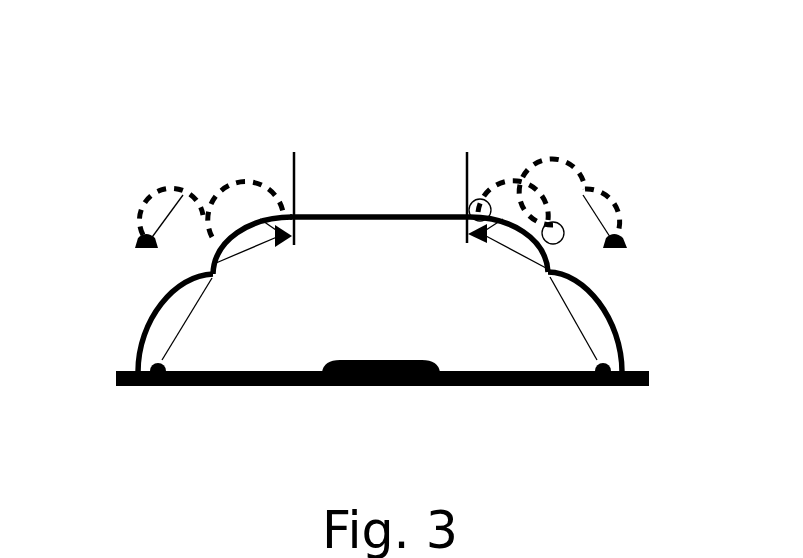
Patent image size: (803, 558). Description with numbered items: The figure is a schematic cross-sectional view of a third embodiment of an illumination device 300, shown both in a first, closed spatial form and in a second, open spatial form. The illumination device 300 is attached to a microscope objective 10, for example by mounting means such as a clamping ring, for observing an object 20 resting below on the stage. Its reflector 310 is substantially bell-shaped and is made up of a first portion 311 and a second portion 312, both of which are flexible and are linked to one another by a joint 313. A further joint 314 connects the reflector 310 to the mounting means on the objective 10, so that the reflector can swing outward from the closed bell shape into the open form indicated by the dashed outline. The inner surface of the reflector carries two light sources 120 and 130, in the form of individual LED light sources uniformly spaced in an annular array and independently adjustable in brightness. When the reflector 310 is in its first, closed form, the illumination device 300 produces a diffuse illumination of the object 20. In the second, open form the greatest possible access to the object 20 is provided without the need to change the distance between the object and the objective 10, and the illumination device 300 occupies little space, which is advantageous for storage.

The illumination device 300 is at (85, 54).
The microscope objective 10 is at (330, 214).
The object 20 is at (400, 362).
The light source 120 is at (168, 362).
The light source 130 is at (381, 255).
The reflector 310 is at (555, 140).
The first portion 311 is at (540, 196).
The second portion 312 is at (617, 203).
The joint 313 is at (562, 244).
The joint 314 is at (482, 198).